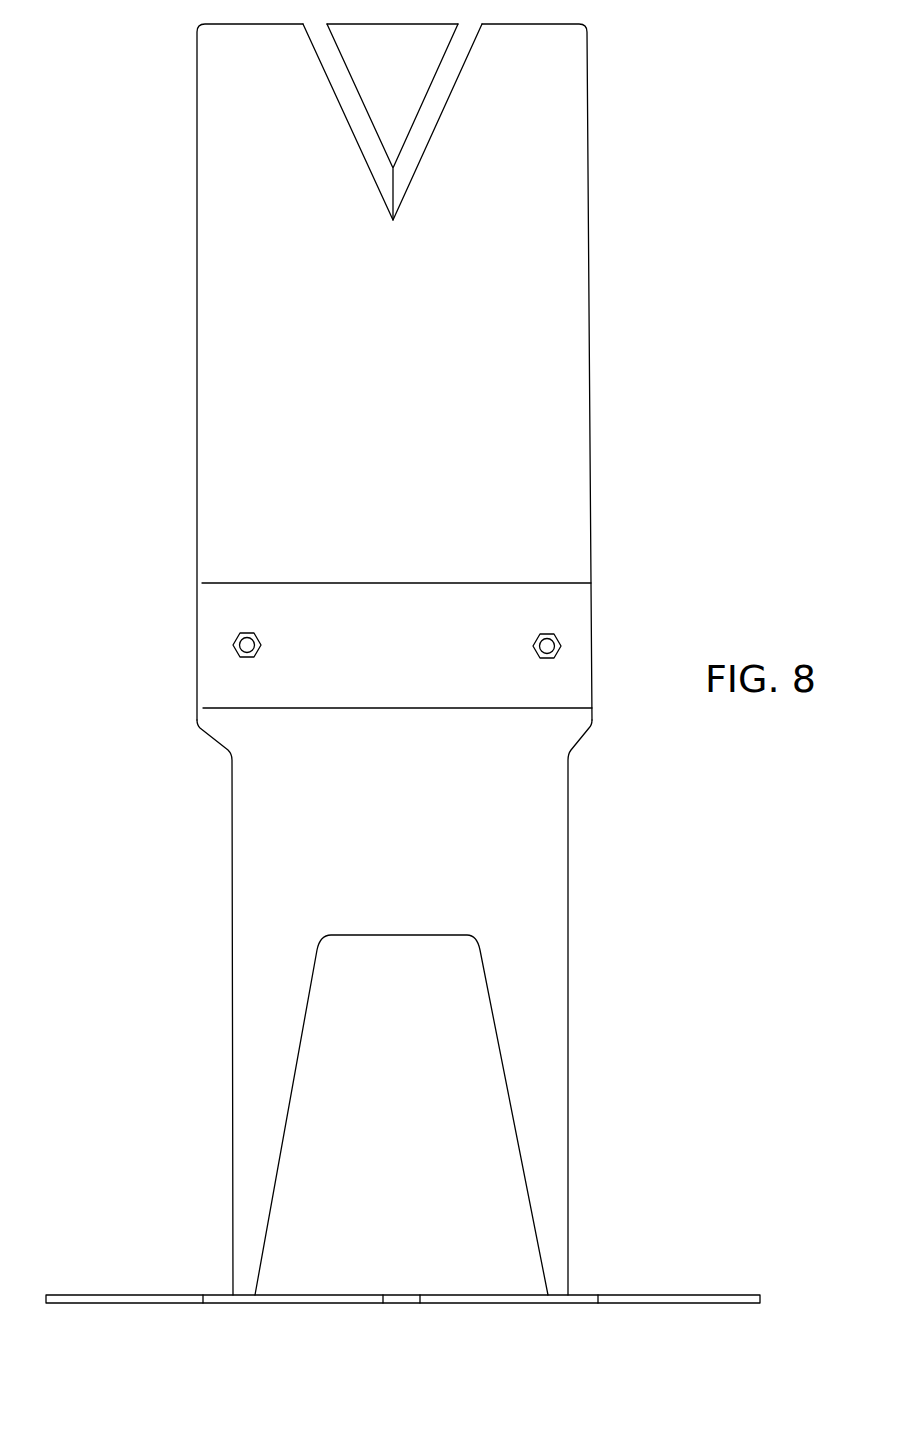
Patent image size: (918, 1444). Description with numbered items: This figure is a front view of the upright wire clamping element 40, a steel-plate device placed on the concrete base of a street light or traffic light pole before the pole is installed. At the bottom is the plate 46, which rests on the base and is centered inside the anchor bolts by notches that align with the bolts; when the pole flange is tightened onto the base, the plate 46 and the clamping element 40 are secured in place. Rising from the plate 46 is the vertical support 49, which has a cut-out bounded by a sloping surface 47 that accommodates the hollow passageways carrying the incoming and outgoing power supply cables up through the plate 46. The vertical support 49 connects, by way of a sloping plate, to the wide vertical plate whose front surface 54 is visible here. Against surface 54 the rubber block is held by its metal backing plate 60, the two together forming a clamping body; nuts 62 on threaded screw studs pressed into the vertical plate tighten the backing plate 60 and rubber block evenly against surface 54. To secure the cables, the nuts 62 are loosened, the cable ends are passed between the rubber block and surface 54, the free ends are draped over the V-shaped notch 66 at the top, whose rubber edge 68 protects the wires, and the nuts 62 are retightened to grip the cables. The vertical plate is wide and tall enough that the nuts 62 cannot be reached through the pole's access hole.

The upright element 40 is at (147, 381).
The surface 54 is at (395, 416).
The V-shaped notch 66 is at (372, 60).
The rubber edge 68 is at (353, 123).
The metal backing plate 60 is at (210, 612).
The nuts 62 is at (235, 656).
The vertical support 49 is at (253, 847).
The sloping surface 47 is at (500, 1203).
The plate 46 is at (111, 1300).